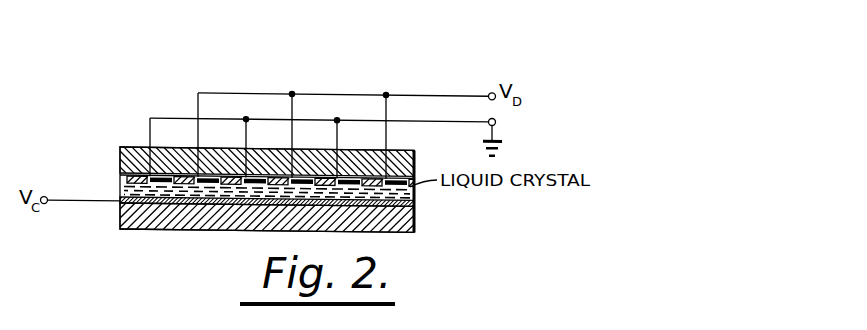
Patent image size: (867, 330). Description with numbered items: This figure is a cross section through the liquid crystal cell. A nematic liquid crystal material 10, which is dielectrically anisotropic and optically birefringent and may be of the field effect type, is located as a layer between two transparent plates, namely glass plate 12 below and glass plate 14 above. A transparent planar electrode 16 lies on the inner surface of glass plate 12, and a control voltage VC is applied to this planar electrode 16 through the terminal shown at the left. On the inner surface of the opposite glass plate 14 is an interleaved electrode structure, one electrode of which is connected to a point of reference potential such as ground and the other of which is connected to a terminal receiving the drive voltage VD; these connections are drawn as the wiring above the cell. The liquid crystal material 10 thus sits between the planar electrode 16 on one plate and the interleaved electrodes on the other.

The nematic liquid crystal material 10 is at (120, 186).
The glass plate 12 is at (410, 218).
The glass plate 14 is at (410, 163).
The transparent planar electrode 16 is at (413, 202).